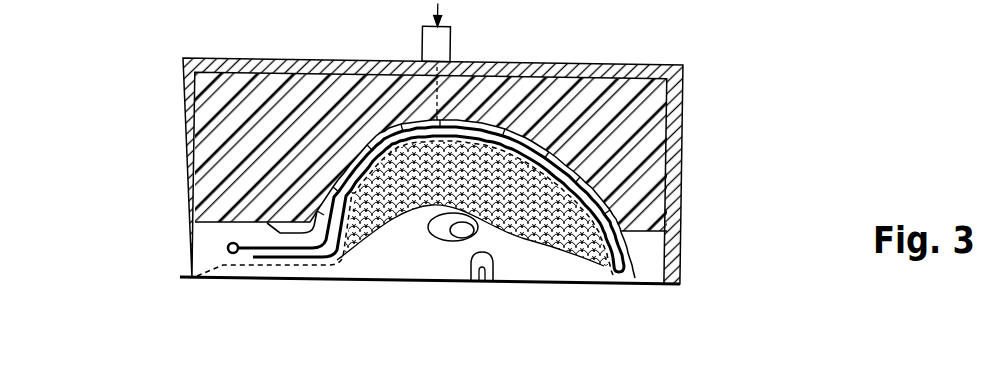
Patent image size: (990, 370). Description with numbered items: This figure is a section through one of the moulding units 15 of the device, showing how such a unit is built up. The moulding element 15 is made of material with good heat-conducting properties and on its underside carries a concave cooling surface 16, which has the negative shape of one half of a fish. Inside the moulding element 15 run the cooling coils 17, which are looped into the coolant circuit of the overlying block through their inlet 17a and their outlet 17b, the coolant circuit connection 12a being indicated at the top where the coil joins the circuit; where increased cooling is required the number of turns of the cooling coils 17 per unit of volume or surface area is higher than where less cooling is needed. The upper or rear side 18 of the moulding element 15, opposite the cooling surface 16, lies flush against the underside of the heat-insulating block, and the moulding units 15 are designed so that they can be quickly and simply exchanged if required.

The inlet connector 12a is at (450, 44).
The moulding element 15 is at (652, 308).
The cooling surface 16 is at (346, 268).
The cooling coil 17 is at (520, 152).
The inlet 17a is at (268, 108).
The outlet 17b is at (232, 228).
The rear side 18 is at (607, 65).